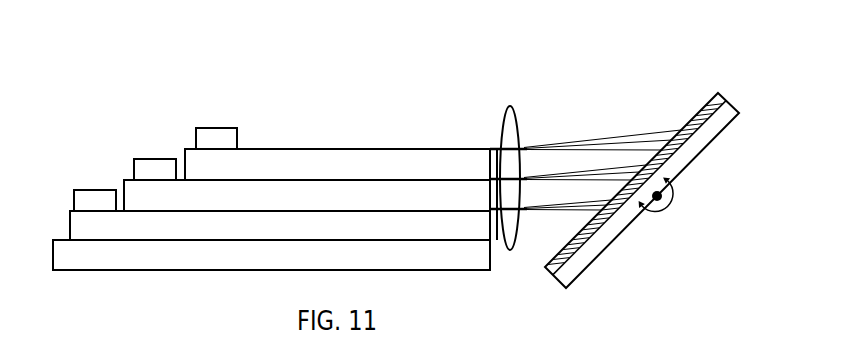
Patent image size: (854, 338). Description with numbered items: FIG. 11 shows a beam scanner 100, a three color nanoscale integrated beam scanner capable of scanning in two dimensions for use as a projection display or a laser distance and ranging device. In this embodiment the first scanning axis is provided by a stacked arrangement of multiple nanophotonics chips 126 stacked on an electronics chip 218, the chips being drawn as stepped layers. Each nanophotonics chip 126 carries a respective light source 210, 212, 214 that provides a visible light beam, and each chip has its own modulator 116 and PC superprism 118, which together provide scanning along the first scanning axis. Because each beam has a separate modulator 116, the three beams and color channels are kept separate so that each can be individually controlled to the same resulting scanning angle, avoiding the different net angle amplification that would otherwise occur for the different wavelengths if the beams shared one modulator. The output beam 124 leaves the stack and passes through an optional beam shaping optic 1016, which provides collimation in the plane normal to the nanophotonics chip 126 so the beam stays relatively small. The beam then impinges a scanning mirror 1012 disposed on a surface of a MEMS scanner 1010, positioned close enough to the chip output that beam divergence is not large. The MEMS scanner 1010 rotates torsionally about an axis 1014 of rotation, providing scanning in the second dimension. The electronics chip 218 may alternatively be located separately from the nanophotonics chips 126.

The beam scanner 100 is at (123, 46).
The nanophotonics chip 126 is at (183, 158).
The light source 210 is at (85, 190).
The light source 212 is at (145, 159).
The light source 214 is at (205, 128).
The electronics chip 218 is at (53, 253).
The modulator 116 is at (390, 172).
The PC superprism 118 is at (461, 172).
The beam shaping optic 1016 is at (510, 107).
The output beam 124 is at (578, 143).
The MEMS scanner 1010 is at (712, 145).
The scanning mirror 1012 is at (703, 110).
The axis of rotation 1014 is at (673, 203).